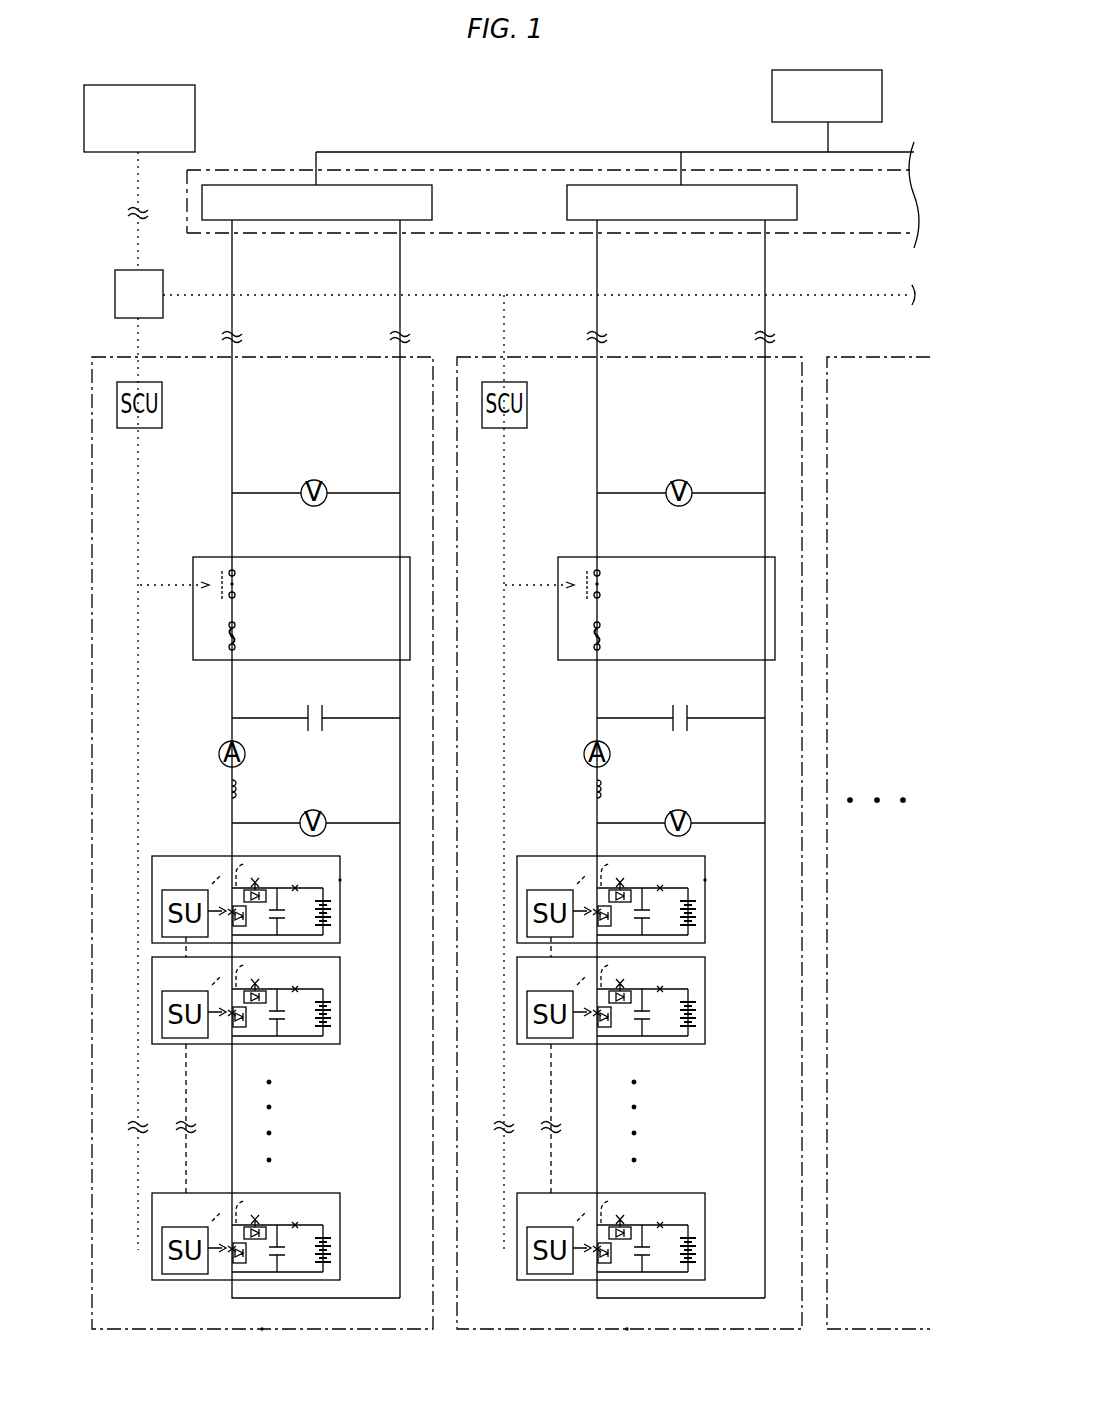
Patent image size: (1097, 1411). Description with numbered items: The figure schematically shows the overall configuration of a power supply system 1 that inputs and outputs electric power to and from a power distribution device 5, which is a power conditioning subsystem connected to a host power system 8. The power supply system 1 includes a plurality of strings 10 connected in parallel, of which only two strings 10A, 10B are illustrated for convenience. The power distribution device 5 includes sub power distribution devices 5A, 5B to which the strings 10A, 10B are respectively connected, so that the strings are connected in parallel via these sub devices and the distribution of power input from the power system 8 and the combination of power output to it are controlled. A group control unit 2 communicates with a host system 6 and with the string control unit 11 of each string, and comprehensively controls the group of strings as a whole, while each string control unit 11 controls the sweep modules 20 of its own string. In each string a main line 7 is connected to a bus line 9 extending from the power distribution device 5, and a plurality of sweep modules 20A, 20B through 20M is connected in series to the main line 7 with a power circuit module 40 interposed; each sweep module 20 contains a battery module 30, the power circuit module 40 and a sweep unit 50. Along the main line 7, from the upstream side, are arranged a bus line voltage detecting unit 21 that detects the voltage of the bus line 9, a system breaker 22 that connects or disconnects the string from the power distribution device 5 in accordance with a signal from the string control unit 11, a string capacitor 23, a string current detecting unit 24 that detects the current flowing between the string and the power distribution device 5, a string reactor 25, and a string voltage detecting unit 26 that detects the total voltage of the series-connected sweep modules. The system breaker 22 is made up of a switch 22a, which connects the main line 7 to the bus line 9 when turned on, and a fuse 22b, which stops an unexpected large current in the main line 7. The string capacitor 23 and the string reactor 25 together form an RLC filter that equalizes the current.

The power supply system 1 is at (115, 245).
The group control unit (GCU) 2 is at (166, 281).
The power distribution device 5 is at (259, 168).
The sub power distribution device 5A is at (436, 205).
The sub power distribution device 5B is at (801, 205).
The host system 6 is at (198, 118).
The main line 7 is at (498, 1077).
The power system 8 is at (885, 98).
The bus line 9 is at (498, 759).
The string 10 is at (152, 1343).
The string 10A is at (261, 1335).
The string 10B is at (626, 1335).
The string control unit (SCU) 11 is at (346, 405).
The sweep module 20 is at (548, 854).
The sweep module 20A is at (342, 909).
The sweep module 20B is at (342, 1010).
The sweep module 20M is at (342, 1246).
The bus line voltage detecting unit 21 is at (498, 469).
The system breaker 22 is at (457, 588).
The switch 22a is at (448, 585).
The fuse 22b is at (448, 638).
The string capacitor 23 is at (498, 697).
The string current detecting unit 24 is at (390, 754).
The string reactor 25 is at (385, 793).
The string voltage detecting unit 26 is at (498, 798).
The battery module 30 is at (537, 1089).
The power circuit module 40 is at (392, 1064).
The sweep unit (SU) 50 is at (334, 1082).